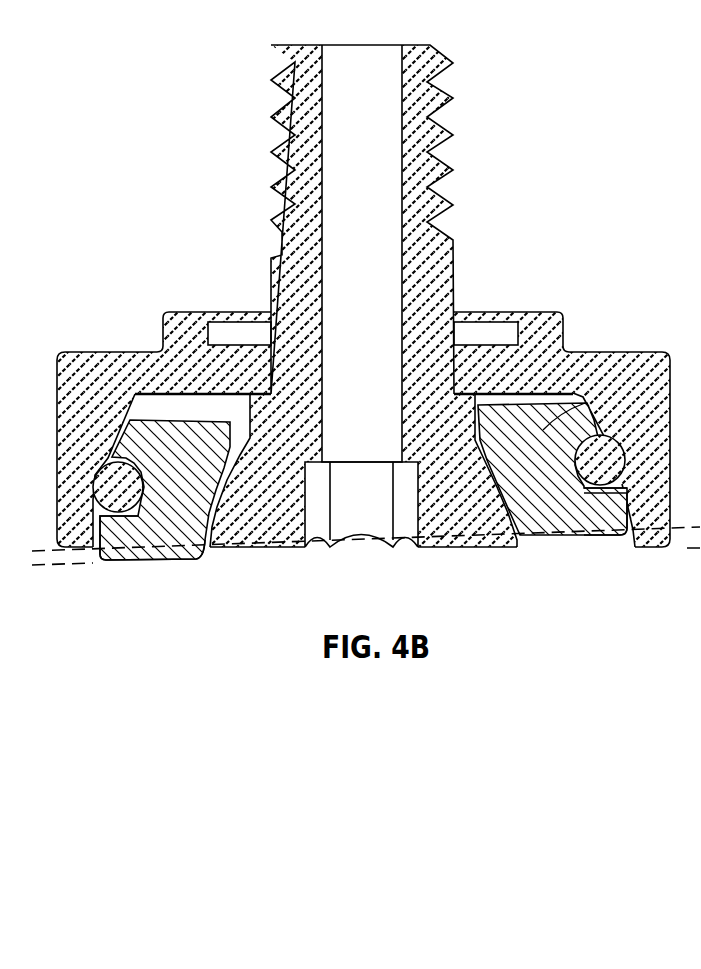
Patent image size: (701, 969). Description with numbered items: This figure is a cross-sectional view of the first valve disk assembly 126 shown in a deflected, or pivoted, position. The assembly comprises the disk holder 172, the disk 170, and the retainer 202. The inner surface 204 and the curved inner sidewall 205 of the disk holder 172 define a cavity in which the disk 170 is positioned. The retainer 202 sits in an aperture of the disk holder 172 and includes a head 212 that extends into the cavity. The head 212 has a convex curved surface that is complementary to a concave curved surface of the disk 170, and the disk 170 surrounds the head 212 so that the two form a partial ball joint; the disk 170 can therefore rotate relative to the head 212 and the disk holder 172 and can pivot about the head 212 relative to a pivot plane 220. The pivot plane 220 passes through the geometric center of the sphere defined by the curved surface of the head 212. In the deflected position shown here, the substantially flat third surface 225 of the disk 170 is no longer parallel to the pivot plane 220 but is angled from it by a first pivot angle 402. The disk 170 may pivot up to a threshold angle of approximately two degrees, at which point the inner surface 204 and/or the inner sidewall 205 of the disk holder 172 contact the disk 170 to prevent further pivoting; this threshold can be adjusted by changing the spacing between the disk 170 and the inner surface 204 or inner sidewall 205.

The first valve disk assembly 126 is at (197, 43).
The disk 170 is at (122, 462).
The disk holder 172 is at (587, 352).
The retainer 202 is at (270, 288).
The inner surface 204 is at (572, 415).
The inner sidewall 205 is at (583, 505).
The head 212 is at (207, 477).
The pivot plane 220 is at (697, 548).
The third surface 225 is at (152, 560).
The first pivot angle 402 is at (62, 548).